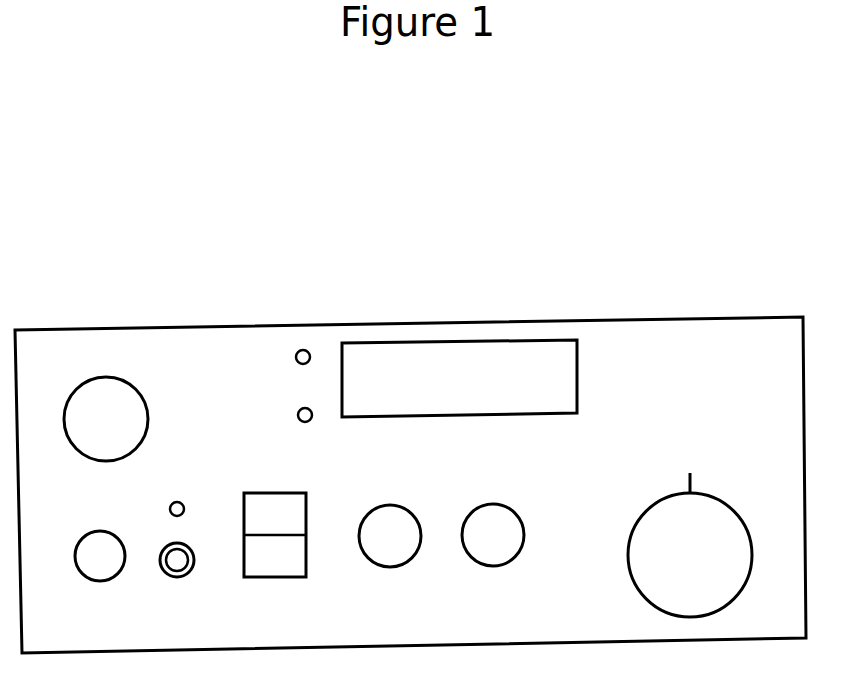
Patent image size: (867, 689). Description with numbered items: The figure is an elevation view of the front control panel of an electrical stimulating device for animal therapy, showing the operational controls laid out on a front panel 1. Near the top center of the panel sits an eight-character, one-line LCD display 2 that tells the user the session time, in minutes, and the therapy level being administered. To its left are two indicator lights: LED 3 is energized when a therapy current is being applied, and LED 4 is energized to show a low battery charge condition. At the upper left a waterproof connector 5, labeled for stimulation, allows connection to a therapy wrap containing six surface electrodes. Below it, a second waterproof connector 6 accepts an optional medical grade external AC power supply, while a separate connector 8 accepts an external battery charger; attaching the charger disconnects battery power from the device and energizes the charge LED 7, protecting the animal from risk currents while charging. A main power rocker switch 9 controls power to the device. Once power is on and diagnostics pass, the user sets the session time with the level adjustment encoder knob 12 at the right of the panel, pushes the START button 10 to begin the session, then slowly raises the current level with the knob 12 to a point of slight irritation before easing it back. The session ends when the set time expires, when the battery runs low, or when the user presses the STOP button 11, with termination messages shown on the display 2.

The front panel 1 is at (623, 322).
The LCD display 2 is at (480, 347).
The LED 3 is at (306, 350).
The LED 4 is at (306, 424).
The waterproof connector 5 is at (100, 377).
The waterproof connector 6 is at (85, 577).
The charge LED 7 is at (178, 502).
The connector 8 is at (163, 562).
The main power rocker switch 9 is at (307, 552).
The START button 10 is at (380, 507).
The STOP button 11 is at (480, 505).
The level adjustment encoder knob 12 is at (638, 518).